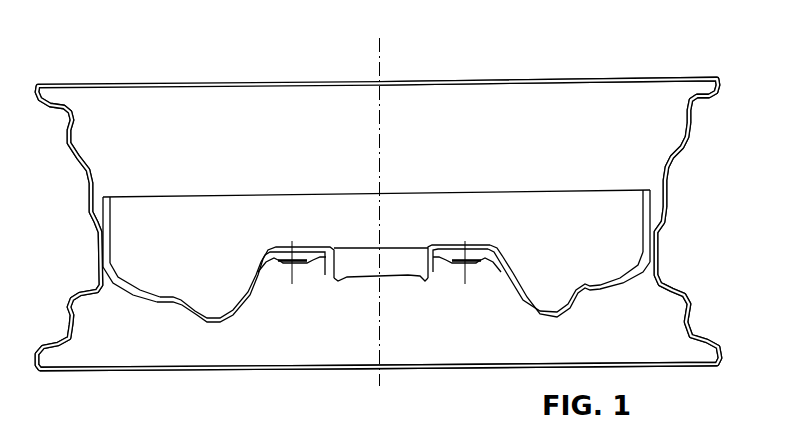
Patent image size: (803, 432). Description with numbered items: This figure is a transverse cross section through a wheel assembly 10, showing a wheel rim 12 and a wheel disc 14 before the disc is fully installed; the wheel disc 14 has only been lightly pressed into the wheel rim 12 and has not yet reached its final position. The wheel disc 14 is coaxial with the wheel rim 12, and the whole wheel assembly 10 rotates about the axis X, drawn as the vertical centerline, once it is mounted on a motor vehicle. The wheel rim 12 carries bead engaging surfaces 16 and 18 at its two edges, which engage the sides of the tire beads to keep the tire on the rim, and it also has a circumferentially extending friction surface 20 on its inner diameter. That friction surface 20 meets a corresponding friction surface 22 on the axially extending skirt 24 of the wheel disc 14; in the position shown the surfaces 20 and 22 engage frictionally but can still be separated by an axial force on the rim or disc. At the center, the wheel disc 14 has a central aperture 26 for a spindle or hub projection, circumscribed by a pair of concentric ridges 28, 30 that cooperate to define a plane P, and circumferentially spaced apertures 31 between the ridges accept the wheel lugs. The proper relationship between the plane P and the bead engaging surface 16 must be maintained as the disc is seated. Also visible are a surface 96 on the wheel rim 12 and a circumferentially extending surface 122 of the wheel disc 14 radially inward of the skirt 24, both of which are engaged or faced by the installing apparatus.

The wheel assembly 10 is at (736, 62).
The wheel rim 12 is at (690, 160).
The wheel disc 14 is at (511, 306).
The bead engaging surface 16 is at (698, 336).
The bead engaging surface 18 is at (708, 101).
The friction surface 20 is at (650, 265).
The friction surface 22 is at (657, 206).
The axially extending skirt 24 is at (648, 216).
The central aperture 26 is at (407, 276).
The concentric ridge 28 is at (430, 251).
The concentric ridge 30 is at (498, 250).
The circumferentially spaced apertures 31 is at (288, 264).
The surface on the rim member 96 is at (673, 292).
The circumferentially extending surface of the wheel disc 122 is at (147, 288).
The plane P is at (380, 216).
The axis X is at (380, 400).